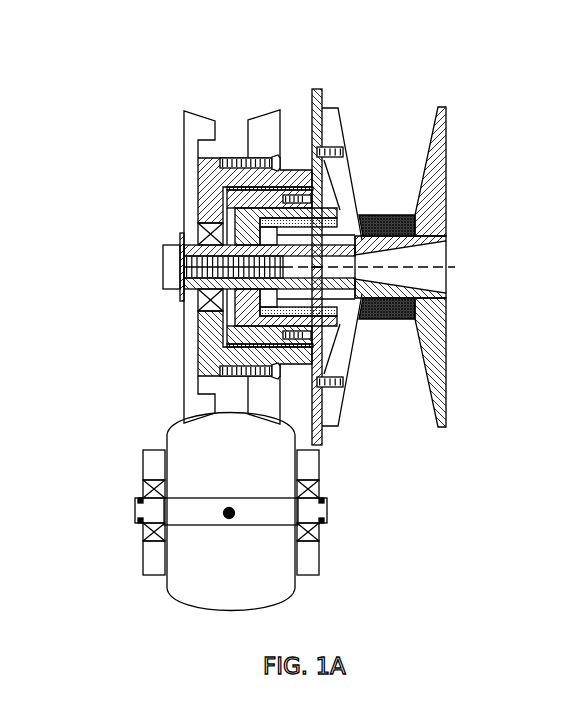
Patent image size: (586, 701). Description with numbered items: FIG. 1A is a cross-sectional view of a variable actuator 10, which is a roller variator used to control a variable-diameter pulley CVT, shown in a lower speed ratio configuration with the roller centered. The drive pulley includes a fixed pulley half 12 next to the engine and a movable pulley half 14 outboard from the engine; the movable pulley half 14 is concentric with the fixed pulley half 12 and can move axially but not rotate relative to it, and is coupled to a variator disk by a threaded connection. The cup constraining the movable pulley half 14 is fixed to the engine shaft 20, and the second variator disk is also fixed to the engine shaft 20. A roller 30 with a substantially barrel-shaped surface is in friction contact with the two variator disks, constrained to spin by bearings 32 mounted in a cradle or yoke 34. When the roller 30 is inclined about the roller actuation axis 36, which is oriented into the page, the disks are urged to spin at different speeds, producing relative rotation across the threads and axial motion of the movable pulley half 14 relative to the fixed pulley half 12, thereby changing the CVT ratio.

The variable actuator 10 is at (187, 72).
The fixed pulley half 12 is at (438, 138).
The movable pulley half 14 is at (333, 131).
The engine shaft 20 is at (432, 281).
The roller 30 is at (183, 443).
The bearings 32 is at (135, 522).
The yoke 34 is at (153, 555).
The roller actuation axis 36 is at (229, 513).